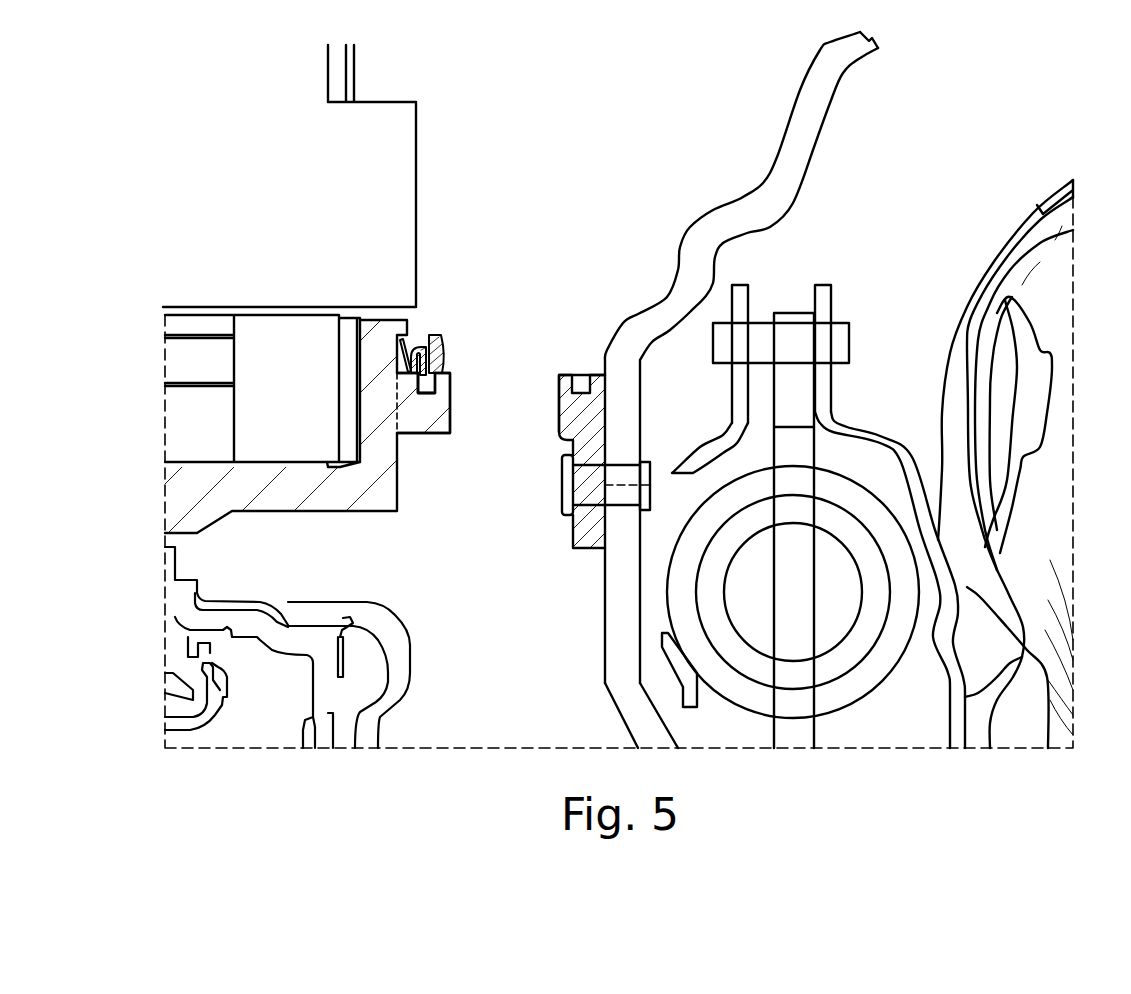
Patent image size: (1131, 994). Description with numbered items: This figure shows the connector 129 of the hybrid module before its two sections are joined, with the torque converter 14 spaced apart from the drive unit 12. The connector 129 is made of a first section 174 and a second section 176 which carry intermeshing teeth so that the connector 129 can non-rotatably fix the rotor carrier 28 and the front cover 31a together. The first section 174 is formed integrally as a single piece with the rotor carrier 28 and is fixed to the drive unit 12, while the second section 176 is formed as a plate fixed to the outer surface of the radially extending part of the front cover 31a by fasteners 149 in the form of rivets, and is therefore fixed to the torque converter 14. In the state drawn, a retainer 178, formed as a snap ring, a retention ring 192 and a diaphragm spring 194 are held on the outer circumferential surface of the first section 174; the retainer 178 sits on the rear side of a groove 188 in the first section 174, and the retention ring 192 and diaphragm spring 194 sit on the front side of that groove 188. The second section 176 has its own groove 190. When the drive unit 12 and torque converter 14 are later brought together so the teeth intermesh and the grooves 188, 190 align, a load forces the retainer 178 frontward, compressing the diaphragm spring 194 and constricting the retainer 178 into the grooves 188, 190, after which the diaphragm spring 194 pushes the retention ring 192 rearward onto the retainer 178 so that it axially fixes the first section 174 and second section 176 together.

The drive unit 12 is at (440, 122).
The torque converter 14 is at (720, 130).
The rotor carrier 28 is at (326, 522).
The front cover 31a is at (647, 330).
The connector 129 is at (452, 303).
The fasteners 149 is at (550, 503).
The first section 174 is at (431, 450).
The second section 176 is at (581, 352).
The retainer 178 is at (447, 340).
The groove 188 is at (437, 403).
The groove 190 is at (575, 400).
The retention ring 192 is at (418, 343).
The diaphragm spring 194 is at (393, 340).